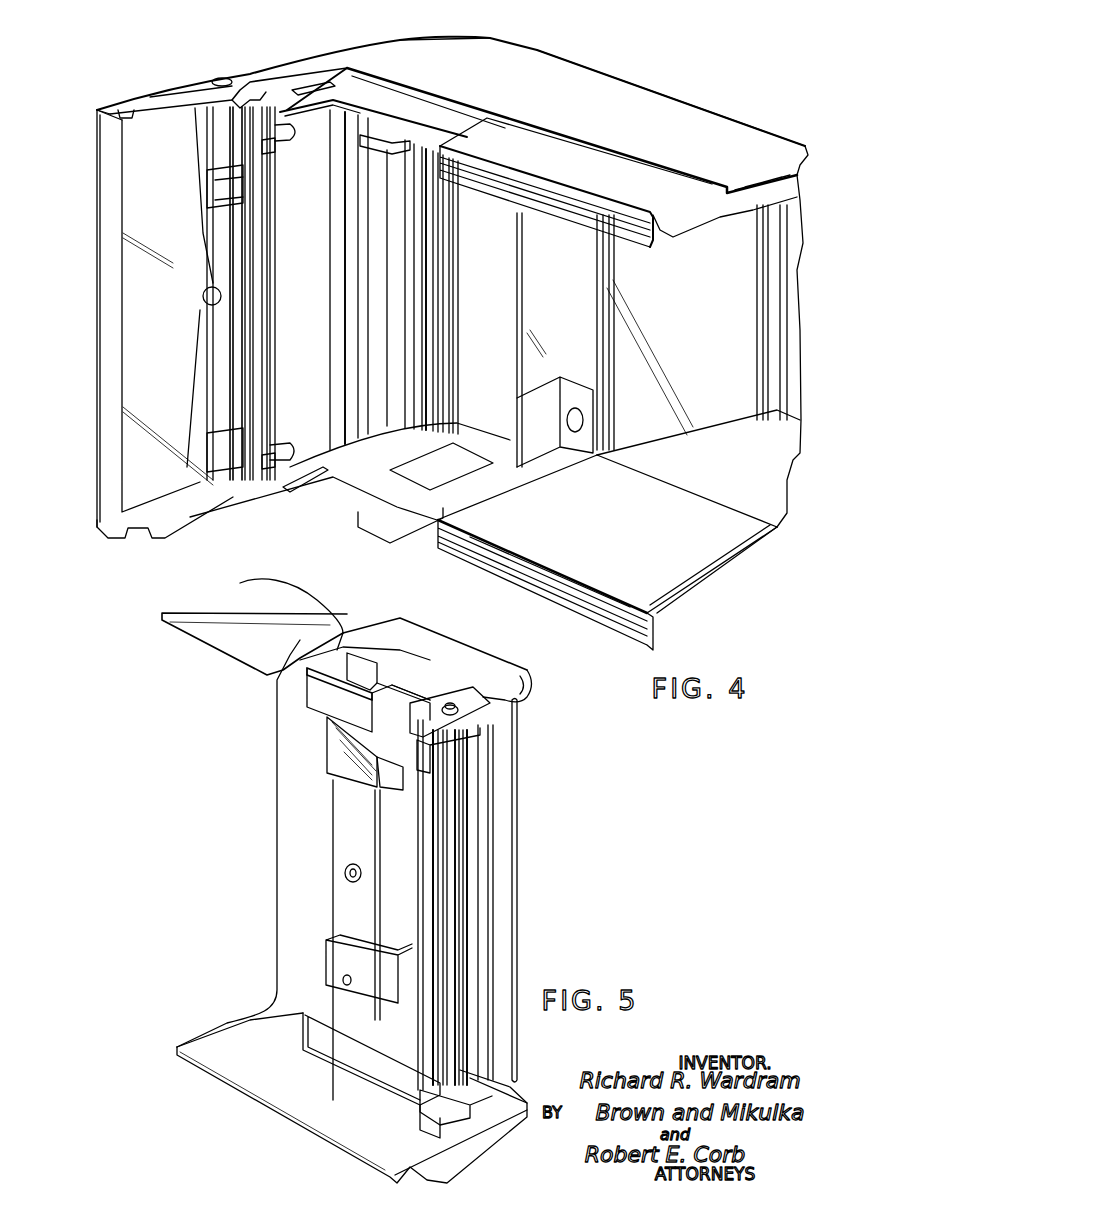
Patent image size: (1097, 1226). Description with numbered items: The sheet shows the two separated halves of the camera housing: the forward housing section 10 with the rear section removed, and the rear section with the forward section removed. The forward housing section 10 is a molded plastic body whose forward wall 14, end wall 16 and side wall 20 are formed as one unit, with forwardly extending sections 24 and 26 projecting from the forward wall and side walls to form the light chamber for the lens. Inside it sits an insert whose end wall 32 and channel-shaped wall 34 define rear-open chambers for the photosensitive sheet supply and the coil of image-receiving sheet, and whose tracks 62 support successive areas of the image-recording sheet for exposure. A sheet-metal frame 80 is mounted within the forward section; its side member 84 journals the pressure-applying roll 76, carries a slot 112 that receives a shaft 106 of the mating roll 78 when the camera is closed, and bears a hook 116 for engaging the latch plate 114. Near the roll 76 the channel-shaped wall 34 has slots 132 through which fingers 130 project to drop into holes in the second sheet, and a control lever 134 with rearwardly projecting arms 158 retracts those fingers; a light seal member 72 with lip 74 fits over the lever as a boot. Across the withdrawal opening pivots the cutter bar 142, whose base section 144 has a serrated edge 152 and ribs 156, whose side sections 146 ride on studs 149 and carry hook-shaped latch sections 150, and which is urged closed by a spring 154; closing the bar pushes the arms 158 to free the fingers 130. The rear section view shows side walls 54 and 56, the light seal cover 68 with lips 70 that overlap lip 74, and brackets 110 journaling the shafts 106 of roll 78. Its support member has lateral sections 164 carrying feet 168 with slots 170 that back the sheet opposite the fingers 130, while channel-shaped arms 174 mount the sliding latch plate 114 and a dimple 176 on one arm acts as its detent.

In FIG. 4, the forward housing section 10 is at (712, 55).
In FIG. 4, the forward wall 14 is at (545, 44).
In FIG. 4, the end wall 16 is at (215, 125).
In FIG. 4, the side wall 20 is at (617, 126).
In FIG. 4, the forwardly extending section 24 is at (685, 333).
In FIG. 4, the forwardly extending section 26 is at (723, 475).
In FIG. 4, the end wall 32 is at (595, 546).
In FIG. 4, the channel-shaped wall 34 is at (390, 285).
In FIG. 5, the side wall 54 is at (400, 628).
In FIG. 5, the side wall 56 is at (215, 1060).
In FIG. 4, the track 62 is at (625, 217).
In FIG. 5, the light seal cover 68 is at (495, 780).
In FIG. 5, the lip 70 is at (518, 867).
In FIG. 4, the light seal member 72 is at (255, 230).
In FIG. 4, the lip 74 is at (268, 278).
In FIG. 4, the pressure-applying roll 76 is at (258, 322).
In FIG. 5, the pressure-applying roll 78 is at (457, 822).
In FIG. 4, the frame 80 is at (425, 118).
In FIG. 4, the side member 84 is at (352, 109).
In FIG. 5, the shaft 106 is at (460, 708).
In FIG. 5, the bracket 110 is at (483, 727).
In FIG. 4, the slot 112 is at (305, 88).
In FIG. 5, the latch plate 114 is at (357, 650).
In FIG. 4, the hook 116 is at (375, 133).
In FIG. 4, the finger 130 is at (285, 135).
In FIG. 4, the slot 132 is at (272, 150).
In FIG. 4, the control lever 134 is at (205, 190).
In FIG. 4, the cutter bar 142 is at (93, 410).
In FIG. 4, the base section 144 is at (137, 320).
In FIG. 4, the side section 146 is at (185, 90).
In FIG. 4, the stud 149 is at (230, 80).
In FIG. 4, the latch section 150 is at (124, 108).
In FIG. 4, the edge 152 is at (95, 125).
In FIG. 4, the spring 154 is at (192, 400).
In FIG. 4, the rib 156 is at (200, 300).
In FIG. 4, the arm 158 is at (213, 180).
In FIG. 5, the lateral section 164 is at (420, 688).
In FIG. 5, the foot 168 is at (377, 735).
In FIG. 5, the slot 170 is at (395, 768).
In FIG. 5, the arm 174 is at (330, 748).
In FIG. 5, the dimple 176 is at (345, 980).